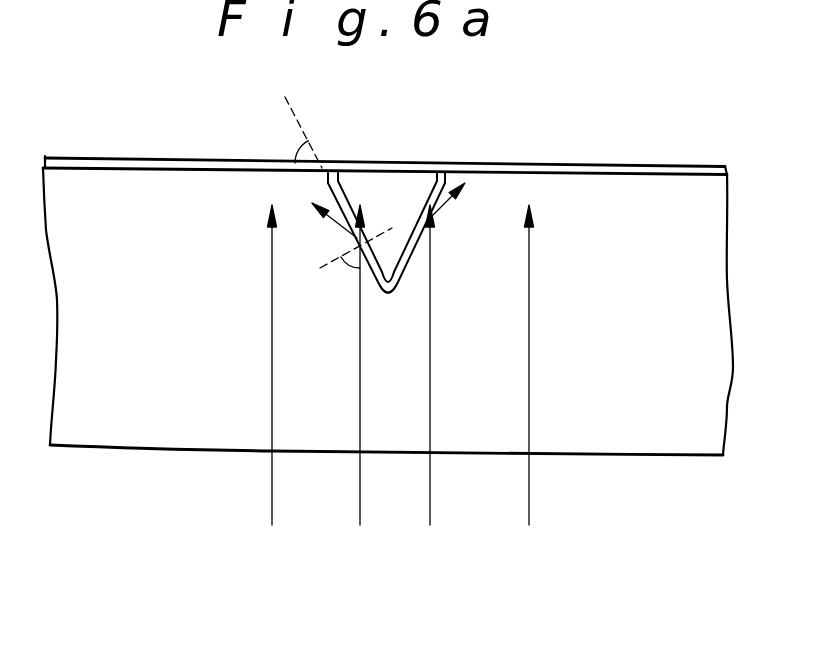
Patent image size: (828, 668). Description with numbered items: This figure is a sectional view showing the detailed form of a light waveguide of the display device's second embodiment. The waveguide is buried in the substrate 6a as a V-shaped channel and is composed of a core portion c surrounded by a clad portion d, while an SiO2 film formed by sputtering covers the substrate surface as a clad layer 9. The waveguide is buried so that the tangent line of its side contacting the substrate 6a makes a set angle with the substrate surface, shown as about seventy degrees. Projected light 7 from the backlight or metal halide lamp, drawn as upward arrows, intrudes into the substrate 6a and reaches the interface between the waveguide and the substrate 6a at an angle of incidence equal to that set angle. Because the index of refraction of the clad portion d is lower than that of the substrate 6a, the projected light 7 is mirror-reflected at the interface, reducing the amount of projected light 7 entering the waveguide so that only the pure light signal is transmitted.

The substrate 6a is at (643, 443).
The clad layer 9 is at (535, 171).
The core portion c is at (383, 192).
The clad portion d is at (402, 273).
The projected light 7 is at (545, 530).